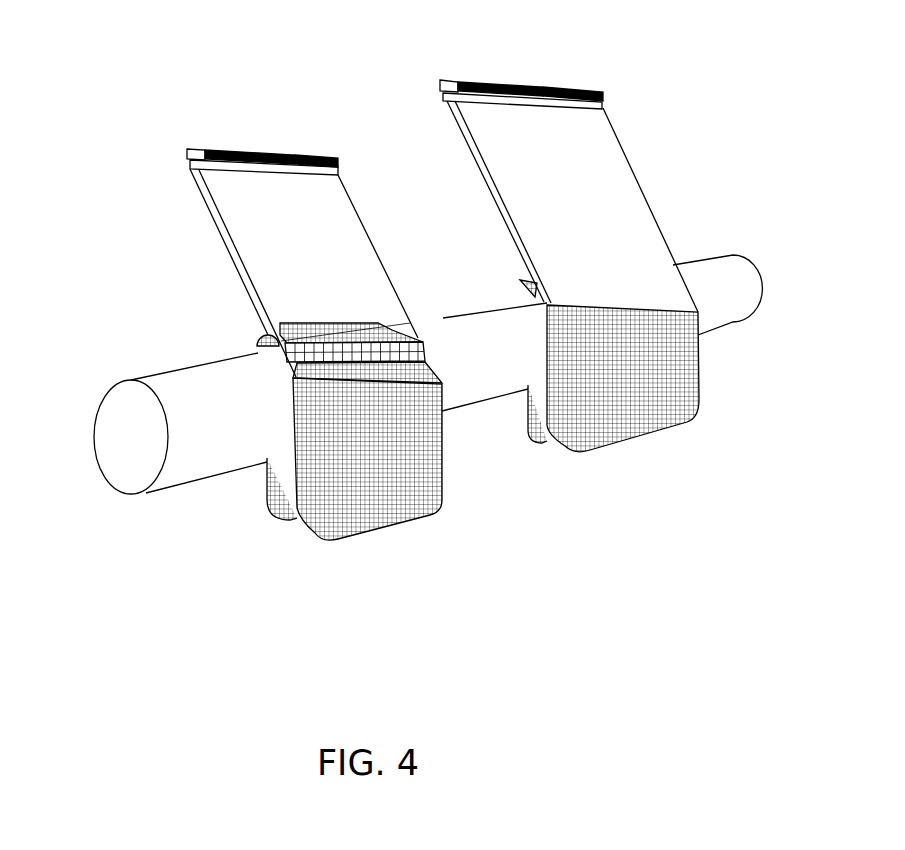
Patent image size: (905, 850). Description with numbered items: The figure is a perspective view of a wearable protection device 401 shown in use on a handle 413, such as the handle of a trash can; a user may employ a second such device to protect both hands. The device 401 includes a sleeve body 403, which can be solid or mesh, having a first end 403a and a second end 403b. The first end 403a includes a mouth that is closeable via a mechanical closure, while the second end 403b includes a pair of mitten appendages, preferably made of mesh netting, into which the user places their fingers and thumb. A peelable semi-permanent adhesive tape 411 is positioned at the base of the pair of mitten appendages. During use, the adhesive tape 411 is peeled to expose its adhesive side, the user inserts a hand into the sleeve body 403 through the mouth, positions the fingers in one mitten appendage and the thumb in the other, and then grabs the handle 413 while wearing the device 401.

The wearable protection device 401 is at (118, 104).
The sleeve body 403 is at (442, 195).
The first end 403a is at (440, 116).
The second end 403b is at (520, 280).
The peelable semi-permanent adhesive tape 411 is at (257, 344).
The handle 413 is at (170, 477).